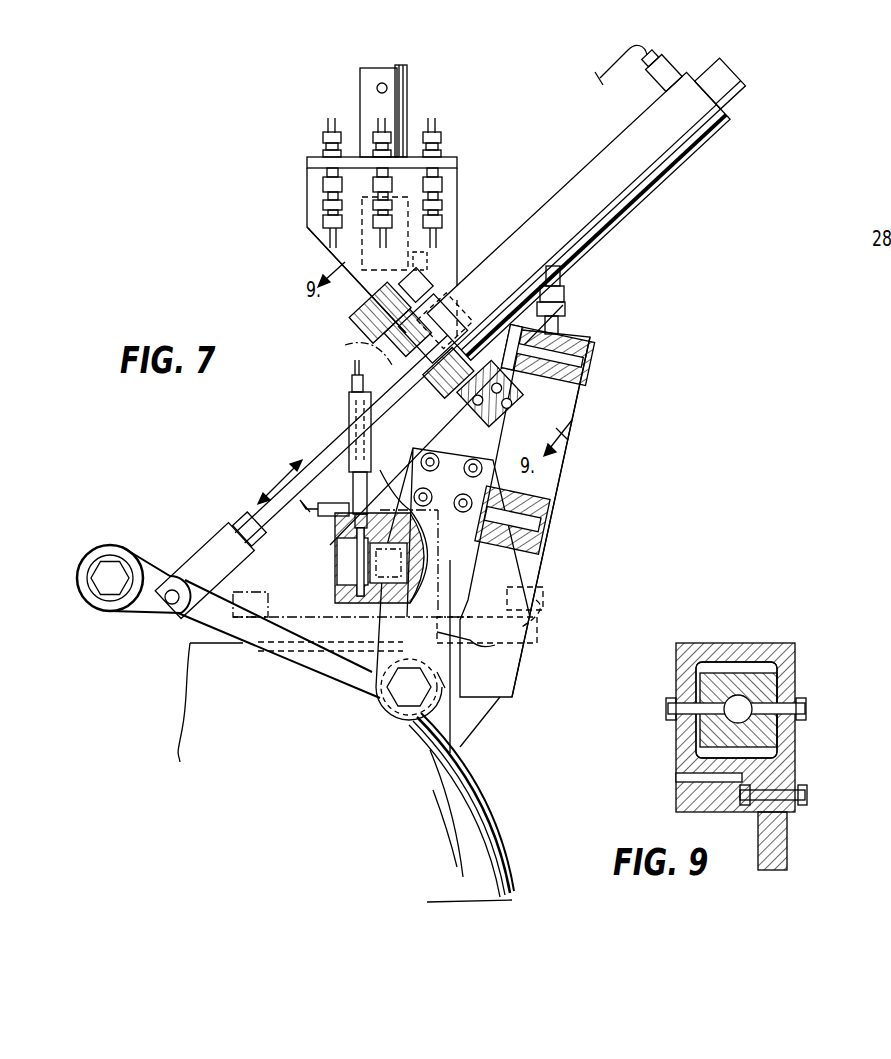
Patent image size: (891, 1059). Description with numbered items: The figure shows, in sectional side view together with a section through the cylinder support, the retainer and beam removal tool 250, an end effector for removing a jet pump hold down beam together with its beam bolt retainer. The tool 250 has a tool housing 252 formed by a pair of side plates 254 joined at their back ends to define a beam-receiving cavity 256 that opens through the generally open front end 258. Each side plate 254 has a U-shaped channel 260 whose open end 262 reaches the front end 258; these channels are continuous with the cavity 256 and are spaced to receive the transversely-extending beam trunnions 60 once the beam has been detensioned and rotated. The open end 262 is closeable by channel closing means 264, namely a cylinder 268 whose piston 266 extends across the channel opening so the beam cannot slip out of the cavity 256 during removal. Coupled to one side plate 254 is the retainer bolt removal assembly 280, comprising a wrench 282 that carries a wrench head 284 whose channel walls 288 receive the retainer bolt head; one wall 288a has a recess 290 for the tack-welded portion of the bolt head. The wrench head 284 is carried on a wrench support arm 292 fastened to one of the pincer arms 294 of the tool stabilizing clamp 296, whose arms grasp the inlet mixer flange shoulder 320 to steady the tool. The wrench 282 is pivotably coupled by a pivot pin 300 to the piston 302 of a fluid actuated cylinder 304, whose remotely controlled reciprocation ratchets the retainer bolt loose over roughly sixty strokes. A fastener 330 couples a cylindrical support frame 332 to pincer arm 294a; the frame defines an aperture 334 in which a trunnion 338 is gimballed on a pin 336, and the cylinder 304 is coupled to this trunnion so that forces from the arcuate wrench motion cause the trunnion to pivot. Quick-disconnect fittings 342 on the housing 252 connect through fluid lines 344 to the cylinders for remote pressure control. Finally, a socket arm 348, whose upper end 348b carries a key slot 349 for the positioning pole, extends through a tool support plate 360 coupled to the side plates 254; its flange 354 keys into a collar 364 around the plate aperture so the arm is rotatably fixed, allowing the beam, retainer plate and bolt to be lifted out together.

In FIG. 7, the retainer and beam removal tool 250 is at (286, 316).
In FIG. 7, the tool housing 252 is at (288, 180).
In FIG. 7, the side plates 254 is at (448, 256).
In FIG. 7, the beam-receiving cavity 256 is at (326, 586).
In FIG. 7, the open front end 258 is at (308, 232).
In FIG. 7, the U-shaped channel 260 is at (326, 655).
In FIG. 7, the open end of channel 262 is at (300, 642).
In FIG. 7, the channel closing means 264 is at (342, 400).
In FIG. 7, the piston 266 is at (337, 518).
In FIG. 7, the cylinder 268 is at (335, 483).
In FIG. 7, the retainer bolt removal assembly 280 is at (563, 182).
In FIG. 7, the wrench 282 is at (195, 615).
In FIG. 7, the wrench head 284 is at (401, 722).
In FIG. 7, the wrench head channel walls 288 is at (392, 690).
In FIG. 7, the channel wall 288a is at (421, 677).
In FIG. 7, the recess 290 is at (428, 656).
In FIG. 7, the wrench support arm 292 is at (520, 620).
In FIG. 7, the pincer arms 294 is at (548, 470).
In FIG. 9, the pincer arm 294a is at (790, 846).
In FIG. 7, the tool stabilizing clamp 296 is at (582, 454).
In FIG. 7, the pivot pin 300 is at (170, 586).
In FIG. 7, the piston 302 is at (320, 450).
In FIG. 9, the piston 302 is at (733, 715).
In FIG. 7, the fluid actuated cylinder 304 is at (655, 183).
In FIG. 7, the shoulder 320 is at (480, 717).
In FIG. 7, the fastener 330 is at (520, 397).
In FIG. 9, the fastener 330 is at (808, 793).
In FIG. 7, the cylindrical support frame 332 is at (450, 300).
In FIG. 9, the cylindrical support frame 332 is at (786, 663).
In FIG. 9, the aperture 334 is at (766, 650).
In FIG. 9, the pin 336 is at (806, 707).
In FIG. 7, the trunnion 338 is at (560, 322).
In FIG. 9, the trunnion 338 is at (703, 686).
In FIG. 7, the quick-disconnect fittings 342 is at (375, 138).
In FIG. 7, the fluid line 344 is at (436, 232).
In FIG. 7, the socket arm 348 is at (349, 351).
In FIG. 7, the upper end of socket arm 348b is at (408, 108).
In FIG. 7, the key slot 349 is at (375, 92).
In FIG. 7, the flange 354 is at (362, 284).
In FIG. 7, the tool support plate 360 is at (458, 160).
In FIG. 7, the collar 364 is at (322, 190).
In FIG. 7, the beam trunnions 60 is at (450, 604).